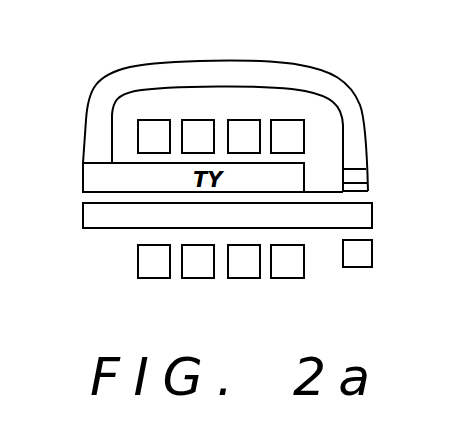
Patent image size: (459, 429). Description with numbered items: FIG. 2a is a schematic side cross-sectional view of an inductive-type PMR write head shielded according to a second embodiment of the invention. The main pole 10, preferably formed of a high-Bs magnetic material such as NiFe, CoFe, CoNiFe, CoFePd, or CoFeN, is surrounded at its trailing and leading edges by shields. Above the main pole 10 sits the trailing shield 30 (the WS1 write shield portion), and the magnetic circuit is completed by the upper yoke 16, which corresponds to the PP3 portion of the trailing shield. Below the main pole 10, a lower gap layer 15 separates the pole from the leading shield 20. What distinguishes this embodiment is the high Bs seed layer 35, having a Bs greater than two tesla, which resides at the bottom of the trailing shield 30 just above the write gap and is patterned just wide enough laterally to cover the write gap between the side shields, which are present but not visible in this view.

The main pole 10 is at (90, 216).
The lower gap layer 15 is at (153, 132).
The upper yoke 16 is at (333, 88).
The leading shield 20 is at (353, 253).
The trailing shield 30 is at (362, 173).
The high Bs seed layer 35 is at (367, 187).